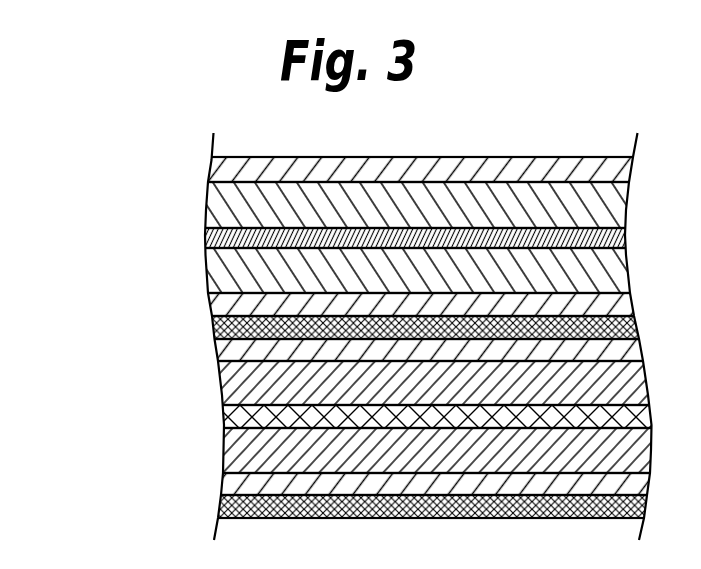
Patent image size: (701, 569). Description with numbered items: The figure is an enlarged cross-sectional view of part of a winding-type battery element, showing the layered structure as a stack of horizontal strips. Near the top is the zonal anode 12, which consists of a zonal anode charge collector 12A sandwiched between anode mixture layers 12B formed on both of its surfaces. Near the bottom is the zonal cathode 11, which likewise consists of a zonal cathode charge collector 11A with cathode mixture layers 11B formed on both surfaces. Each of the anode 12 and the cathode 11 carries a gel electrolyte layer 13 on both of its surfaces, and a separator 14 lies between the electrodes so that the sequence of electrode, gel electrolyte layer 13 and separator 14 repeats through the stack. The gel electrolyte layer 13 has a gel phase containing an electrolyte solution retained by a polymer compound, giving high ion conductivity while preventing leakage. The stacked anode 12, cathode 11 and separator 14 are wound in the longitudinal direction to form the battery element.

The cathode 11 is at (351, 417).
The cathode charge collector 11A is at (224, 415).
The cathode mixture layers 11B is at (220, 378).
The anode 12 is at (347, 237).
The anode charge collector 12A is at (206, 237).
The anode mixture layers 12B is at (209, 200).
The gel electrolyte layer 13 is at (212, 167).
The separator 14 is at (213, 323).